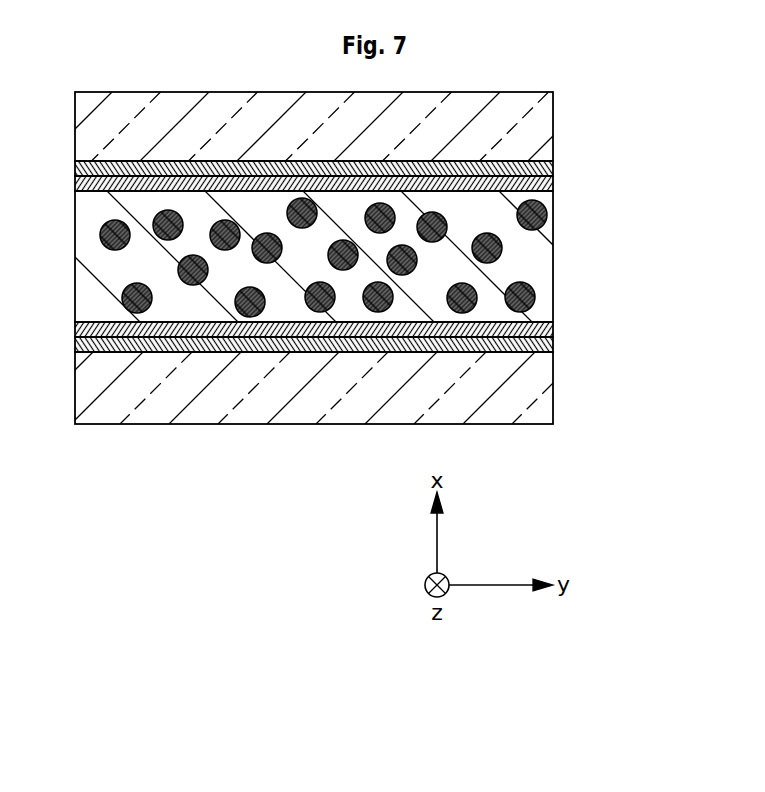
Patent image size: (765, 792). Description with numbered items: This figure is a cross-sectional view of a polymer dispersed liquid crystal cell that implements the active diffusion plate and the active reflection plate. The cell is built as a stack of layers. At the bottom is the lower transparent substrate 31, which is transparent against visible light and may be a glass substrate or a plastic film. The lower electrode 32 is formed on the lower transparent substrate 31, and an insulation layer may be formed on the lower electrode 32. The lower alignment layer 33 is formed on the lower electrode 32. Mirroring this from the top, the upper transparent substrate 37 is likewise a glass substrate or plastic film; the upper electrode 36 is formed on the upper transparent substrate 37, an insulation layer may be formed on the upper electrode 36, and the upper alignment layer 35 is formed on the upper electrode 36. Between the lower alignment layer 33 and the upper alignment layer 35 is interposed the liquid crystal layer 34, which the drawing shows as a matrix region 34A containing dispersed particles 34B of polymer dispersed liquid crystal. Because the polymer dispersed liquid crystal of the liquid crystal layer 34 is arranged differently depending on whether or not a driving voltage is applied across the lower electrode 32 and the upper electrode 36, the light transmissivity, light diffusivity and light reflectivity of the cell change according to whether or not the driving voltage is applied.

The lower transparent substrate 31 is at (535, 402).
The lower electrode 32 is at (552, 347).
The lower alignment layer 33 is at (552, 330).
The liquid crystal layer 34 is at (343, 256).
The matrix 34A is at (537, 263).
The particles 34B is at (546, 218).
The upper alignment layer 35 is at (551, 187).
The upper electrode 36 is at (551, 168).
The upper transparent substrate 37 is at (547, 129).